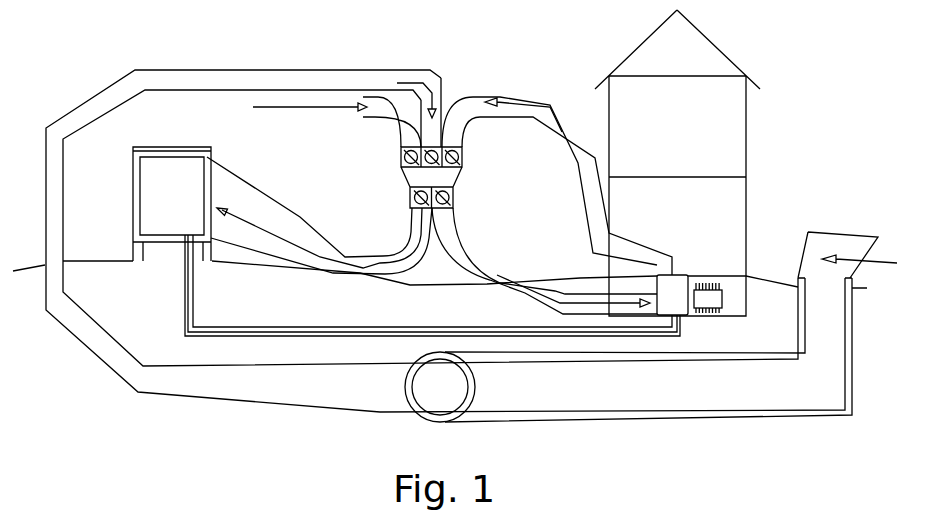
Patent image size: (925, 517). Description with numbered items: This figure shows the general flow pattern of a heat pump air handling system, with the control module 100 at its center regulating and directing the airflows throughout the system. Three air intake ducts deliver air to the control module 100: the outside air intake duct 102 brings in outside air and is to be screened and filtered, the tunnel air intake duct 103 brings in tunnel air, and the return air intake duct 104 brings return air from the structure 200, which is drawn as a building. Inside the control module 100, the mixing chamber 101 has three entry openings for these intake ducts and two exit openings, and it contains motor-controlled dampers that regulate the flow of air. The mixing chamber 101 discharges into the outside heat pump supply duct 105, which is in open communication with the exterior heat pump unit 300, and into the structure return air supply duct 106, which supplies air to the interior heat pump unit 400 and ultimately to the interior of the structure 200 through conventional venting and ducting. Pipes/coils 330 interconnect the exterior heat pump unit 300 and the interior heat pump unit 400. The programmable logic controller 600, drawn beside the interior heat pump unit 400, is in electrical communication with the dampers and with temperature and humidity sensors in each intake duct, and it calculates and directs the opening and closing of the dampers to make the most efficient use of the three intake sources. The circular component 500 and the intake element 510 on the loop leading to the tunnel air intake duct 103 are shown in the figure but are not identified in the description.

The control module 100 is at (439, 178).
The mixing chamber 101 is at (440, 185).
The outside air intake duct 102 is at (392, 115).
The tunnel air intake duct 103 is at (418, 77).
The return air intake duct 104 is at (528, 125).
The outside heat pump supply duct 105 is at (406, 264).
The structure return air supply duct 106 is at (459, 228).
The structure 200 is at (699, 148).
The exterior heat pump unit 300 is at (197, 207).
The pipes/coils 330 is at (345, 328).
The interior heat pump unit 400 is at (685, 298).
The circulation pump 500 is at (433, 387).
The intake pipe 510 is at (897, 268).
The programmable logic controller 600 is at (708, 298).